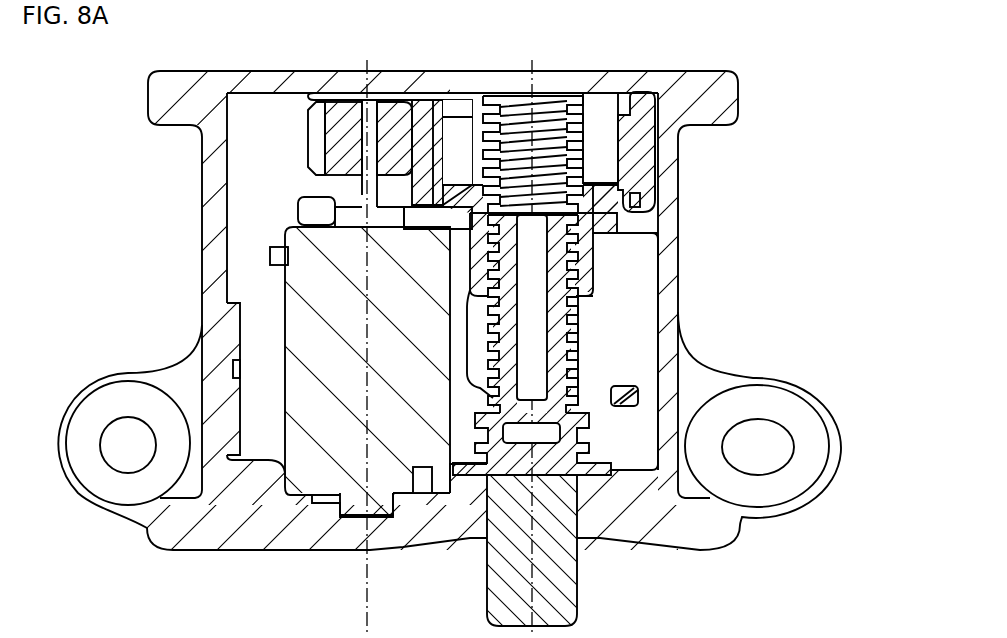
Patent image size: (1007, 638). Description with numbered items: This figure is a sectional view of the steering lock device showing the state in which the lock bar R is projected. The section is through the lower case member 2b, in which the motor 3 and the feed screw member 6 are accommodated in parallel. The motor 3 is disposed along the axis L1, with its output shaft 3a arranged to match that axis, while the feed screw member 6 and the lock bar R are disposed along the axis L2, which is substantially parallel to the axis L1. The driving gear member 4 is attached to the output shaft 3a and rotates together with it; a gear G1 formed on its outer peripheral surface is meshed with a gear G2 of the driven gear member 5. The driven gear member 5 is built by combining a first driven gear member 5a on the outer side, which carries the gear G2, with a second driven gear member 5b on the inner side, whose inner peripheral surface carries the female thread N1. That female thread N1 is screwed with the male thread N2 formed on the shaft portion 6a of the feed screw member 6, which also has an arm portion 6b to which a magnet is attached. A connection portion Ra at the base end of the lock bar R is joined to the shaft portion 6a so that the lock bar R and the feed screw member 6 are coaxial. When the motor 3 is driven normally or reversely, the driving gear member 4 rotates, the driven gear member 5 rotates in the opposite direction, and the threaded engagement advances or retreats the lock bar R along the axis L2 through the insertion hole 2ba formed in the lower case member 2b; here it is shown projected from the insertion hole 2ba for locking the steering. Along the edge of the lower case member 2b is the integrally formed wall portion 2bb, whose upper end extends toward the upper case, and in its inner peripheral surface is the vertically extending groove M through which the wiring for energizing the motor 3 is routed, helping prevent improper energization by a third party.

The lower case member 2b is at (215, 232).
The insertion hole 2ba is at (577, 538).
The wall portion 2bb is at (208, 327).
The motor 3 is at (290, 285).
The output shaft 3a is at (360, 185).
The driving gear member 4 is at (333, 105).
The driven gear member 5 is at (660, 172).
The first driven gear member 5a is at (436, 118).
The second driven gear member 5b is at (652, 208).
The feed screw member 6 is at (592, 318).
The shaft portion 6a is at (578, 343).
The arm portion 6b is at (580, 466).
The gear G1 is at (312, 153).
The gear G2 is at (661, 160).
The axis L1 is at (368, 331).
The axis L2 is at (530, 331).
The groove M is at (246, 371).
The female thread N1 is at (562, 127).
The male thread N2 is at (600, 300).
The lock bar R is at (505, 568).
The connection portion Ra is at (560, 450).